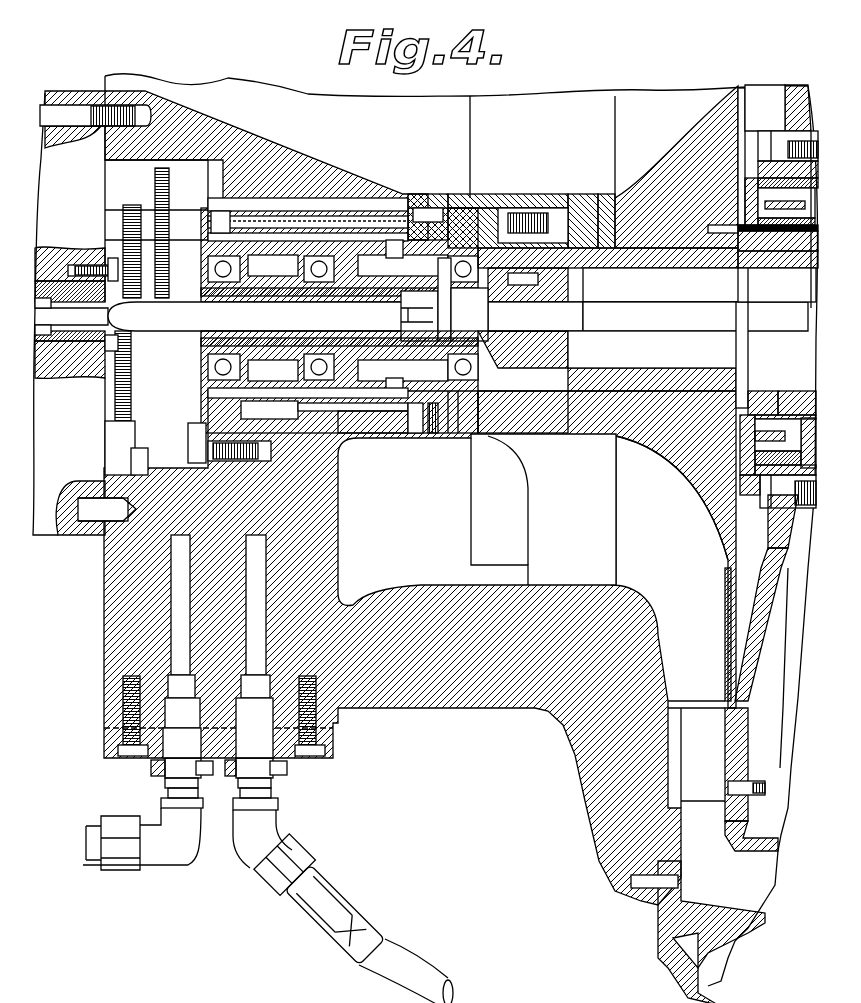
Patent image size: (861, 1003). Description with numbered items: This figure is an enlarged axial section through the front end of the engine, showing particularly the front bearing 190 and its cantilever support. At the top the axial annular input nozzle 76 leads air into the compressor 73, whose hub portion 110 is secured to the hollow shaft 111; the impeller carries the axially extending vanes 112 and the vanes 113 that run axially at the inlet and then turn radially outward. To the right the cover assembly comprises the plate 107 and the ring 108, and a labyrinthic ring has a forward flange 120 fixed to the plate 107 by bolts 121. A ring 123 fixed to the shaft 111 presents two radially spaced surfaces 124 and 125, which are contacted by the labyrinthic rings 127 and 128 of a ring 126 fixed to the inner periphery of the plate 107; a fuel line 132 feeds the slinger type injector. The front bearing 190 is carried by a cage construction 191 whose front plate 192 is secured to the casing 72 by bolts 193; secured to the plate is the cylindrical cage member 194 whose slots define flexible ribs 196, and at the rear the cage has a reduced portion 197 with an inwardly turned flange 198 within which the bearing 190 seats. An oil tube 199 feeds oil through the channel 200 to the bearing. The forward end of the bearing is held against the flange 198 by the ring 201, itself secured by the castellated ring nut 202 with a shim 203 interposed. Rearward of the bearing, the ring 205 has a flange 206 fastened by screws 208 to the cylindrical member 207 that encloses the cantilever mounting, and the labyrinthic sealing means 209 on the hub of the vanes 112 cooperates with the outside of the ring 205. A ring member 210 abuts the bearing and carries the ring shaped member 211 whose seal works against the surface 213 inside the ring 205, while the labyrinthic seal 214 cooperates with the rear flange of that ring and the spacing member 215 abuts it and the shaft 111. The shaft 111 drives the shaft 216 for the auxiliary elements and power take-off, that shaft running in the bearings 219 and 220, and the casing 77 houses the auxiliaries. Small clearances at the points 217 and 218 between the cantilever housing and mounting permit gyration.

The casing 72 is at (532, 705).
The compressor 73 is at (560, 88).
The axial annular input nozzle 76 is at (234, 165).
The casing 77 is at (75, 305).
The plate 107 is at (765, 552).
The ring 108 is at (760, 850).
The hub portion 110 is at (665, 440).
The hollow shaft 111 is at (630, 363).
The vanes 112 is at (531, 500).
The vanes 113 is at (696, 705).
The flange 120 is at (766, 548).
The bolts 121 is at (762, 112).
The ring 123 is at (797, 393).
The surface 124 is at (747, 450).
The surface 125 is at (725, 316).
The ring 126 is at (777, 285).
The labyrinthic ring 127 is at (778, 333).
The labyrinthic ring 128 is at (680, 135).
The fuel line 132 is at (668, 293).
The front bearing 190 is at (463, 299).
The cage construction 191 is at (420, 186).
The front plate 192 is at (205, 170).
The bolts 193 is at (185, 430).
The cylindrical cage member 194 is at (269, 414).
The flexible ribs 196 is at (308, 406).
The reduced portion 197 is at (505, 200).
The flange 198 is at (570, 186).
The oil tube 199 is at (340, 190).
The channel 200 is at (418, 200).
The ring 201 is at (395, 290).
The castellated ring nut 202 is at (377, 382).
The shim 203 is at (407, 425).
The ring 205 is at (470, 432).
The flange 206 is at (470, 190).
The cylindrical member 207 is at (390, 440).
The screws 208 is at (445, 430).
The labyrinthic sealing means 209 is at (598, 200).
The ring member 210 is at (495, 300).
The ring shaped member 211 is at (595, 323).
The surface 213 is at (520, 428).
The labyrinthic seal 214 is at (525, 270).
The spacing member 215 is at (575, 360).
The shaft 216 is at (458, 314).
The point 217 is at (380, 420).
The point 218 is at (424, 425).
The bearing 219 is at (200, 252).
The bearing 220 is at (380, 247).